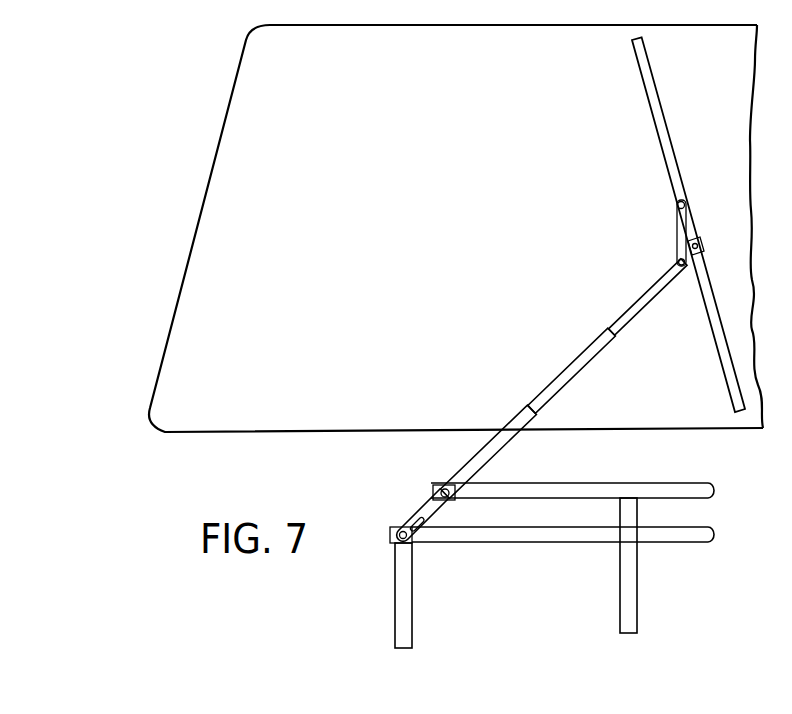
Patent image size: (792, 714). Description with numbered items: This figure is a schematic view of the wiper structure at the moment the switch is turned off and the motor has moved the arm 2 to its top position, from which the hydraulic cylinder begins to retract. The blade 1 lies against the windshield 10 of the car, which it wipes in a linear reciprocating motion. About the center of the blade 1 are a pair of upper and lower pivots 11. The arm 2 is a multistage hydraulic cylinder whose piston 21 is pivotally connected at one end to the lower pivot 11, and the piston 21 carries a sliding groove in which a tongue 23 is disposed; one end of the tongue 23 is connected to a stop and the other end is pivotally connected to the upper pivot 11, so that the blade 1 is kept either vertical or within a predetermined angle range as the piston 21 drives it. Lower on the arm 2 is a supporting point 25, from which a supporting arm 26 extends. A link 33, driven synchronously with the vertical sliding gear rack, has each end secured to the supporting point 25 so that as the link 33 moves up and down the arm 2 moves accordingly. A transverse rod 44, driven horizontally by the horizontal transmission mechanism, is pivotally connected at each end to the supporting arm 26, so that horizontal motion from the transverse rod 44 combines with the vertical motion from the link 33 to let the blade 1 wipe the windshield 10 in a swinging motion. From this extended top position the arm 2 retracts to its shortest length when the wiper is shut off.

The blade 1 is at (665, 141).
The windshield 10 is at (745, 137).
The pivot 11 is at (686, 207).
The tongue 23 is at (676, 233).
The arm 2 is at (501, 411).
The piston 21 is at (538, 409).
The supporting point 25 is at (444, 488).
The supporting arm 26 is at (428, 509).
The link 33 is at (598, 487).
The transverse rod 44 is at (543, 541).